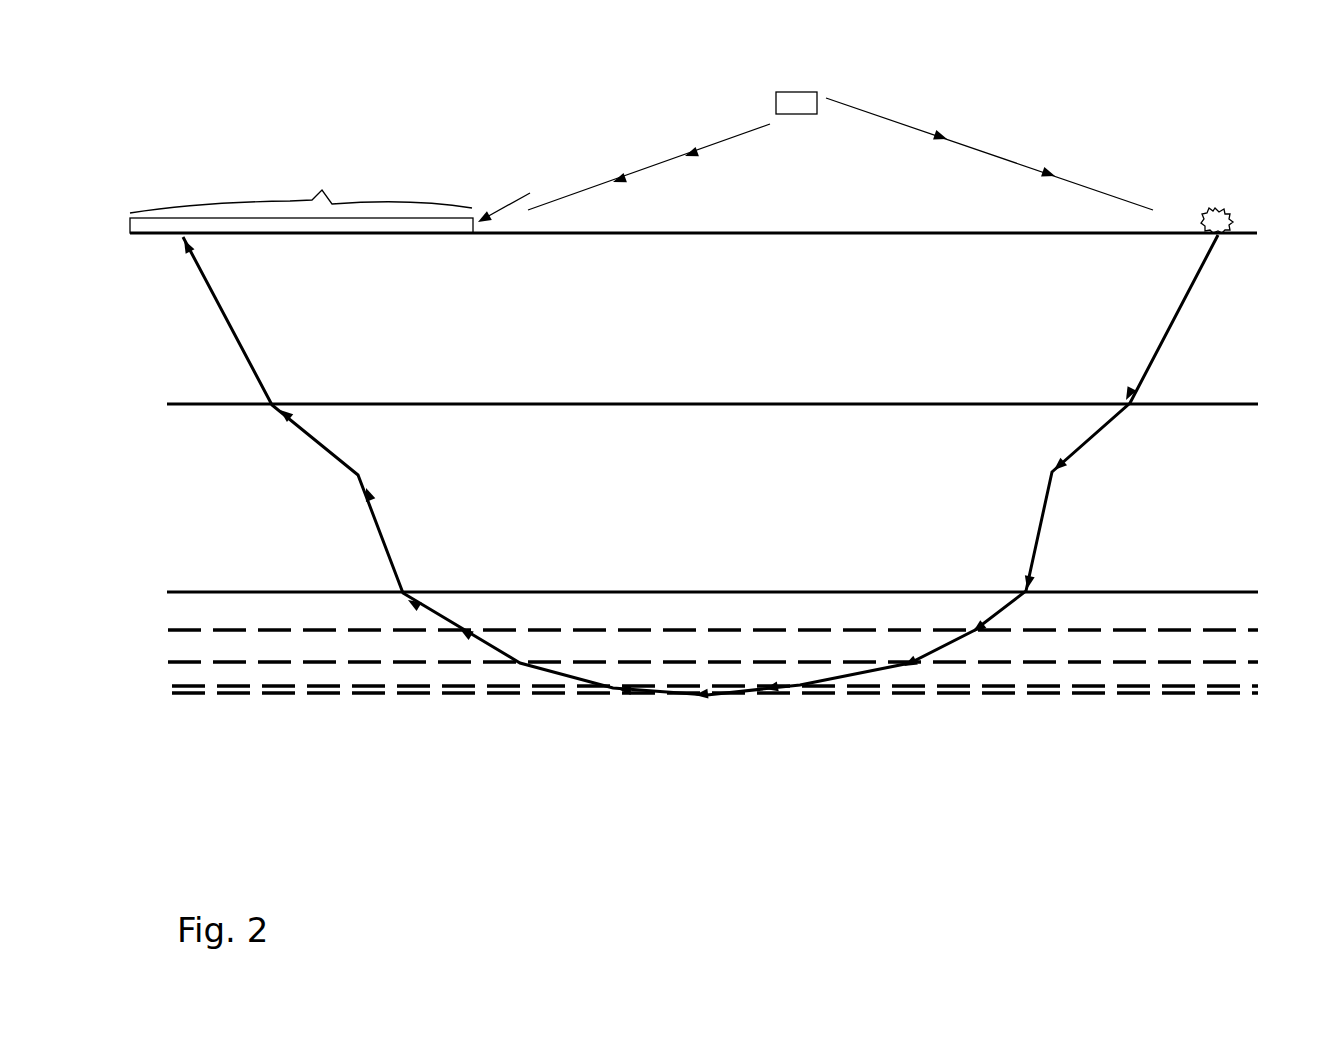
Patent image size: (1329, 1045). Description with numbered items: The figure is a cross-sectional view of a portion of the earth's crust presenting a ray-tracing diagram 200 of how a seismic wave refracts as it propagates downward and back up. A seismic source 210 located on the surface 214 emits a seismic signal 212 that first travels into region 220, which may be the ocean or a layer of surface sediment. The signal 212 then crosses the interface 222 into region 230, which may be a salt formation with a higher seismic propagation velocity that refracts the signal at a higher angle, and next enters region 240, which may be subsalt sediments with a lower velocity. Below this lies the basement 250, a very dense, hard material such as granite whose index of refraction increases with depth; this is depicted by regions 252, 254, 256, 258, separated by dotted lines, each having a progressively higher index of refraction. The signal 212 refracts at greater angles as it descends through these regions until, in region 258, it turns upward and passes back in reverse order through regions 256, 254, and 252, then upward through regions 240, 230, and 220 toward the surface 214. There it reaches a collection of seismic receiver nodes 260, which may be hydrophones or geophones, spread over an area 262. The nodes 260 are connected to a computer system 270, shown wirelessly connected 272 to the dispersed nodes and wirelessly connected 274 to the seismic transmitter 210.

The ray-tracing diagram 200 is at (92, 100).
The seismic source 210 is at (1230, 198).
The seismic signal 212 is at (1210, 282).
The surface 214 is at (1004, 228).
The region 220 is at (695, 297).
The interface 222 is at (398, 396).
The region 230 is at (695, 440).
The region 240 is at (694, 532).
The basement 250 is at (575, 586).
The region 252 is at (713, 617).
The region 254 is at (713, 650).
The region 256 is at (195, 678).
The region 258 is at (158, 690).
The seismic receiver nodes 260 is at (513, 197).
The area 262 is at (301, 196).
The computer system 270 is at (803, 76).
The wireless connection 272 is at (690, 176).
The wireless connection 274 is at (960, 166).